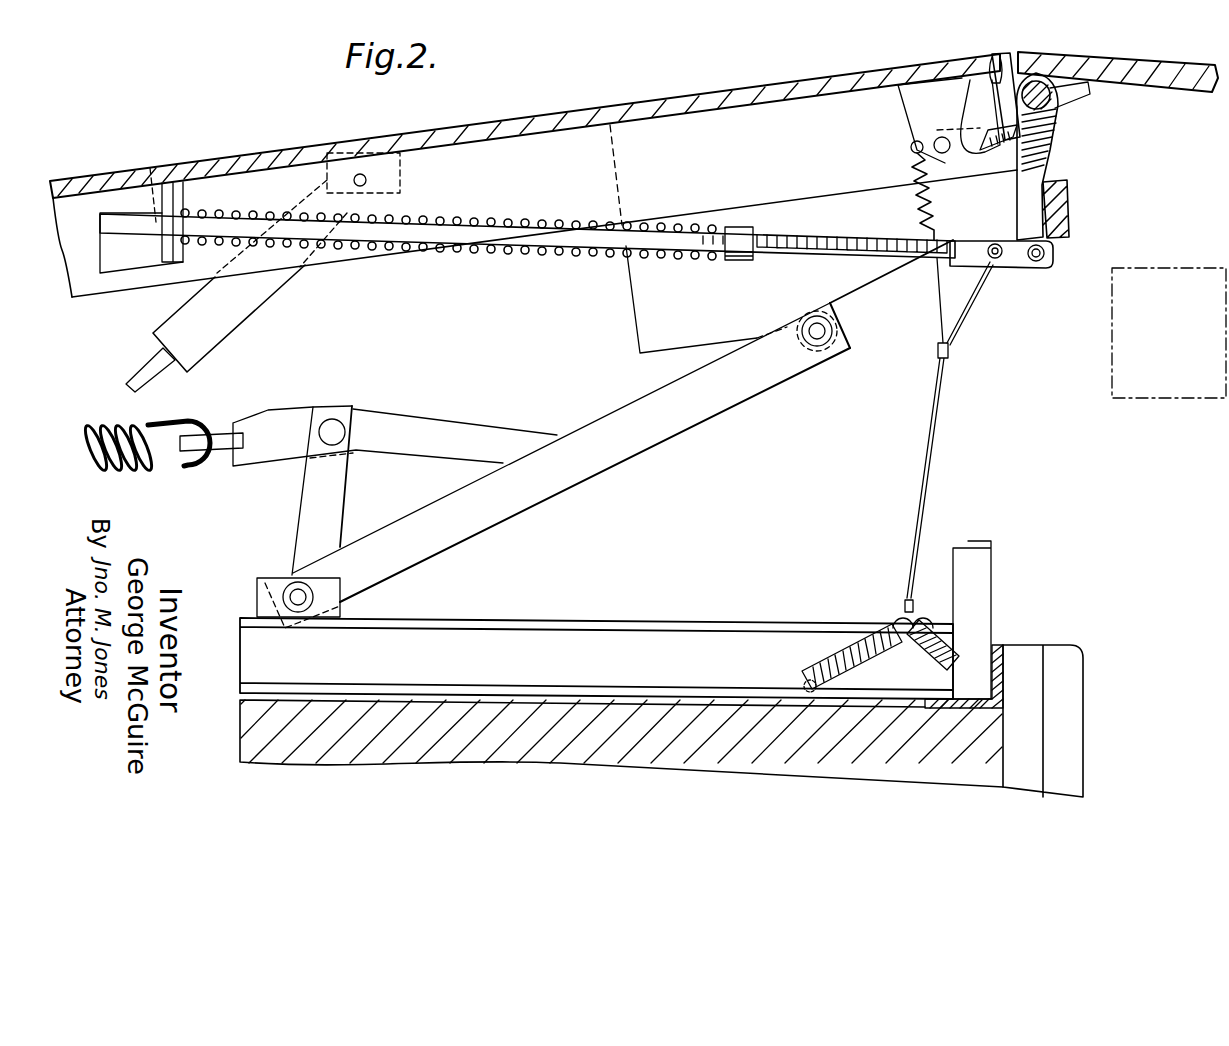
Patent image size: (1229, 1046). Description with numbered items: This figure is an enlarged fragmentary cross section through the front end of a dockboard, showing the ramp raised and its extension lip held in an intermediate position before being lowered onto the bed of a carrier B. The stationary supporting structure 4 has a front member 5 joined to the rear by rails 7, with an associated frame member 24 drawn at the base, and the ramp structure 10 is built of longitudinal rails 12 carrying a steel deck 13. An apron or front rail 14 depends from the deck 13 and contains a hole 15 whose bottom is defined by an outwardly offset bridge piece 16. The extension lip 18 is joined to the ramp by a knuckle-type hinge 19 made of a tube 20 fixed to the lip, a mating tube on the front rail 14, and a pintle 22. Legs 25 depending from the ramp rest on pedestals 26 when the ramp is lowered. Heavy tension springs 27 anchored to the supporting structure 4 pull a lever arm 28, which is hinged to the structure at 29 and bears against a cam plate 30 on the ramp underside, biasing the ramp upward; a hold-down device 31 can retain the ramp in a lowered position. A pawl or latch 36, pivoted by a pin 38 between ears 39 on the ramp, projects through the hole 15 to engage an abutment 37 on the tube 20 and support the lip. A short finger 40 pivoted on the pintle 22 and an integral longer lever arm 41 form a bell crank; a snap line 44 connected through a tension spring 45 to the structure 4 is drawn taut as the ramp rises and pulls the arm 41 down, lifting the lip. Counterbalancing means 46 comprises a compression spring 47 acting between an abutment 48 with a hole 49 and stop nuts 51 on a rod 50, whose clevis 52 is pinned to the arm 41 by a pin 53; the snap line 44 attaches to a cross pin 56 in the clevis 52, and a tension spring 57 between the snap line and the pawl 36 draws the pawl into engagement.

The stationary mounting or supporting structure 4 is at (766, 553).
The front member 5 is at (1015, 640).
The rail 7 is at (637, 648).
The ramp structure 10 is at (294, 117).
The longitudinal rail 12 is at (536, 146).
The deck 13 is at (598, 106).
The apron or front rail 14 is at (997, 55).
The hole 15 is at (1010, 66).
The offset bridge piece 16 is at (1070, 215).
The extension lip 18 is at (1162, 62).
The hinge 19 is at (1048, 84).
The tube 20 is at (1036, 80).
The hinge pin or pintle 22 is at (1060, 108).
The base beam 24 is at (534, 694).
The leg 25 is at (935, 290).
The pedestal 26 is at (986, 540).
The tension spring 27 is at (115, 428).
The lever arm 28 is at (610, 417).
The hinged connection 29 is at (295, 595).
The cam plate 30 is at (848, 305).
The hold-down device 31 is at (152, 320).
The pawl or latch 36 is at (965, 125).
The abutment 37 is at (1008, 122).
The pin 38 is at (938, 142).
The ears 39 is at (918, 97).
The short lever arm or finger 40 is at (1078, 88).
The lever arm 41 is at (1046, 166).
The snap line 44 is at (968, 312).
The tension spring 45 is at (927, 612).
The counterbalancing means 46 is at (496, 205).
The compression spring 47 is at (586, 232).
The abutment 48 is at (175, 183).
The hole 49 is at (150, 172).
The rod 50 is at (540, 232).
The stop nuts 51 is at (735, 226).
The clevis 52 is at (1020, 270).
The pin 53 is at (1050, 252).
The cross pin 56 is at (996, 245).
The tension spring 57 is at (920, 207).
The bed of a carrier B is at (1176, 268).